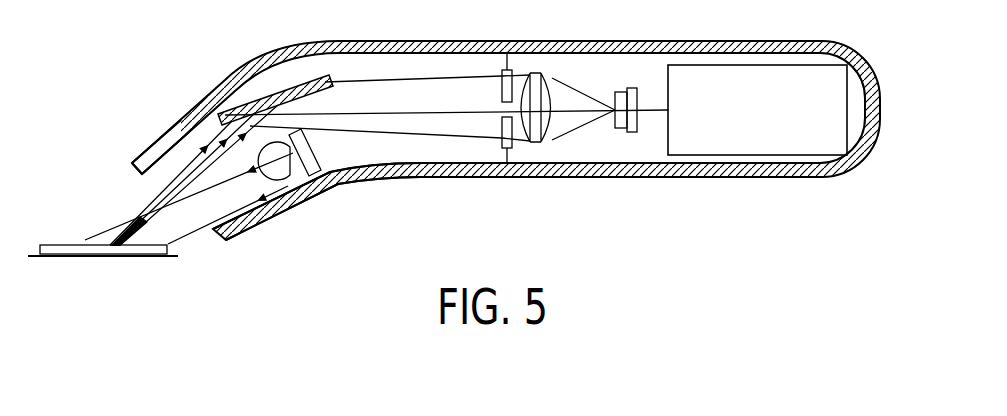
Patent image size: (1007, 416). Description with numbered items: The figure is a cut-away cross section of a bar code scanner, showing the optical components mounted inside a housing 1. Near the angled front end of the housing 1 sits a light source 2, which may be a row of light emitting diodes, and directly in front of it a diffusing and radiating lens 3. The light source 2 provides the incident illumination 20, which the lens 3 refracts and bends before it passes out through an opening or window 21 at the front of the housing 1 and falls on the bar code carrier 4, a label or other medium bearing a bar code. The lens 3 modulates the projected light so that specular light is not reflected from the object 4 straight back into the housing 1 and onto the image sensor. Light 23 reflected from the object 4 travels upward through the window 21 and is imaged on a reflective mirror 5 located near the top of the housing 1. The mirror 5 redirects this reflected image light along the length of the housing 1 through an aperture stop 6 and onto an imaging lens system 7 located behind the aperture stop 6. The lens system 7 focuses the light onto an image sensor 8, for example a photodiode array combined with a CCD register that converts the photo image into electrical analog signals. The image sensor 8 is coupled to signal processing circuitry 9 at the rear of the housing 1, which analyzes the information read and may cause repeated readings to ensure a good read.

The housing 1 is at (675, 41).
The light source 2 is at (338, 188).
The diffusing and radiating lens 3 is at (285, 208).
The bar code carrier 4 is at (42, 246).
The reflective mirror 5 is at (309, 78).
The aperture stop 6 is at (508, 150).
The imaging lens system 7 is at (557, 134).
The image sensor 8 is at (634, 133).
The signal processing circuitry 9 is at (797, 72).
The incident illumination 20 is at (186, 215).
The window 21 is at (150, 183).
The reflected light 23 is at (200, 150).